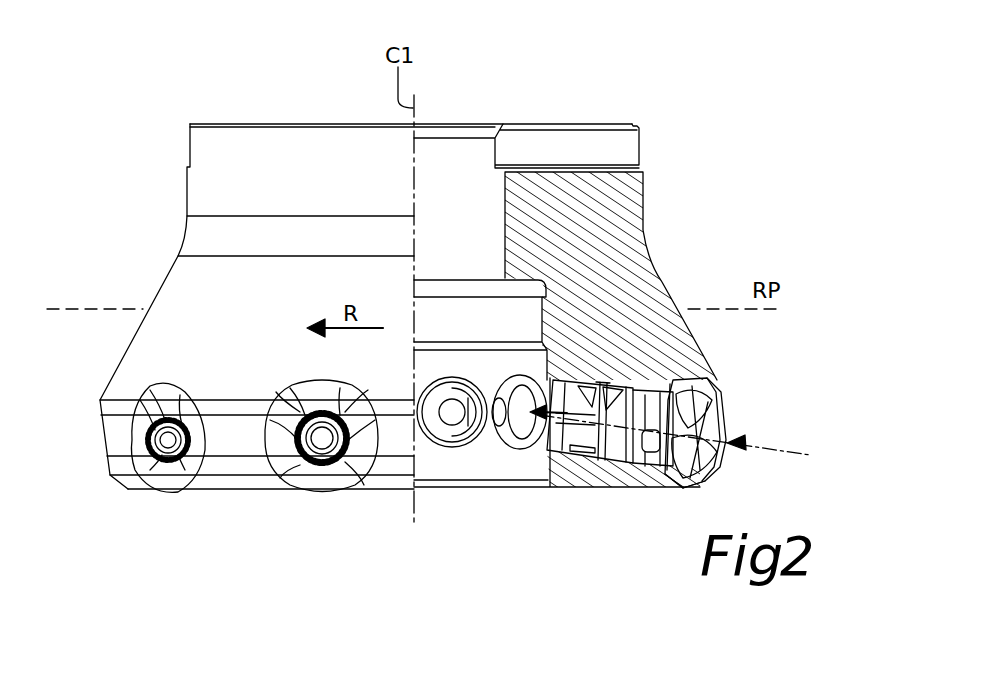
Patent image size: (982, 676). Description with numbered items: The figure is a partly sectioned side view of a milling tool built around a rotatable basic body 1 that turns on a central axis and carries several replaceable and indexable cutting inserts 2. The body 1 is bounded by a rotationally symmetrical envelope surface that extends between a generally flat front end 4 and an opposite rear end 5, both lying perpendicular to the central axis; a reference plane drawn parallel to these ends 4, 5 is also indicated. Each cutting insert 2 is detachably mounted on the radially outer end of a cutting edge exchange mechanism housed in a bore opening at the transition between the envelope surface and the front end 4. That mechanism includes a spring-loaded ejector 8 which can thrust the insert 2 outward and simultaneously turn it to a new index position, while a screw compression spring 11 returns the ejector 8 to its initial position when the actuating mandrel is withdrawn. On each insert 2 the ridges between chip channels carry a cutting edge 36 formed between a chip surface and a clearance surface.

The basic body 1 is at (662, 181).
The cutting insert 2 is at (732, 389).
The front end 4 is at (257, 492).
The rear end 5 is at (288, 123).
The ejector 8 is at (607, 436).
The screw compression spring 11 is at (600, 430).
The cutting edge 36 is at (697, 483).